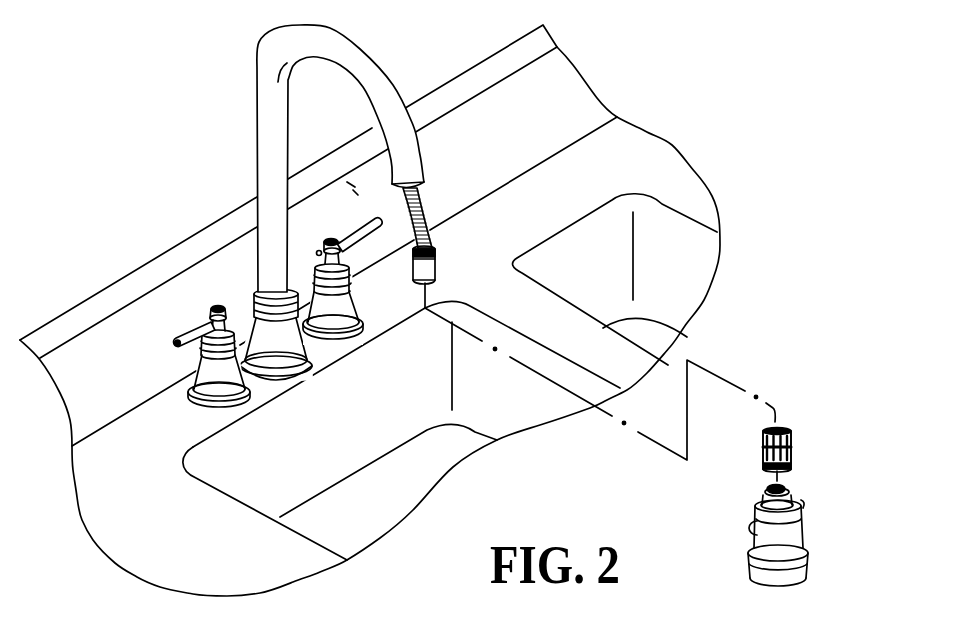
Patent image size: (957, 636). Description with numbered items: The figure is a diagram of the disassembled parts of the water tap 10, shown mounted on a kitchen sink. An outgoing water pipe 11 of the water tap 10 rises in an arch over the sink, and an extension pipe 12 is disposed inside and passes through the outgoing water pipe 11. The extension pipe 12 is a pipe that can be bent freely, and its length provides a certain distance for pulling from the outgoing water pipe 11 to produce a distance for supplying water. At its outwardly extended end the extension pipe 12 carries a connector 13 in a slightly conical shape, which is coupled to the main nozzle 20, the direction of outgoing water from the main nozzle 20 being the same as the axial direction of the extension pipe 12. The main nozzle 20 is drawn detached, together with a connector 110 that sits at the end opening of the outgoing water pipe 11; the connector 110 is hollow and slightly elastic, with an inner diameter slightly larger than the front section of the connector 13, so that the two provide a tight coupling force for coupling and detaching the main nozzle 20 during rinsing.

The water tap 10 is at (227, 268).
The outgoing water pipe 11 is at (337, 45).
The extension pipe 12 is at (427, 202).
The connector 13 is at (435, 262).
The connector 110 is at (795, 441).
The main nozzle 20 is at (806, 528).